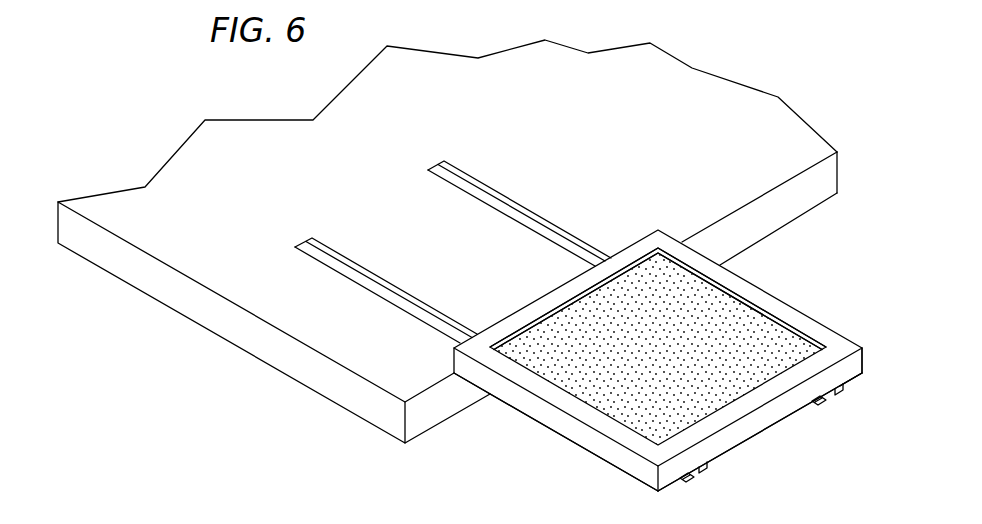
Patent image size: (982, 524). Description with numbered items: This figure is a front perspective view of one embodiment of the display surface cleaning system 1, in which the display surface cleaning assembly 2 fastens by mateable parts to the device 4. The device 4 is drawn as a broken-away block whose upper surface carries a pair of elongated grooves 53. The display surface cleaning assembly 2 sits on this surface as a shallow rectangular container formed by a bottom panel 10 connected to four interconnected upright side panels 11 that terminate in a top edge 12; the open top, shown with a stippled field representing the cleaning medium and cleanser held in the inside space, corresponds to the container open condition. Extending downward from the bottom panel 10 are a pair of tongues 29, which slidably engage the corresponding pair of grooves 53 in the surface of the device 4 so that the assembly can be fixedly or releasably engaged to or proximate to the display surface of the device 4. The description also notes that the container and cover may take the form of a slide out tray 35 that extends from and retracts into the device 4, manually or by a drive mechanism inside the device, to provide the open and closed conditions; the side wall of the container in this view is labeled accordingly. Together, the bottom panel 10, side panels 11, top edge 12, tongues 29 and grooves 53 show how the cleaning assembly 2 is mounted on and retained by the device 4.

The display surface cleaning system 1 is at (762, 63).
The device 4 is at (785, 140).
The grooves 53 is at (528, 210).
The display surface cleaning assembly 2 is at (810, 290).
The bottom panel 10 is at (590, 455).
The top edge 12 is at (532, 383).
The side panels 11 is at (735, 268).
The slide out tray 35 is at (752, 427).
The tongues 29 is at (836, 403).